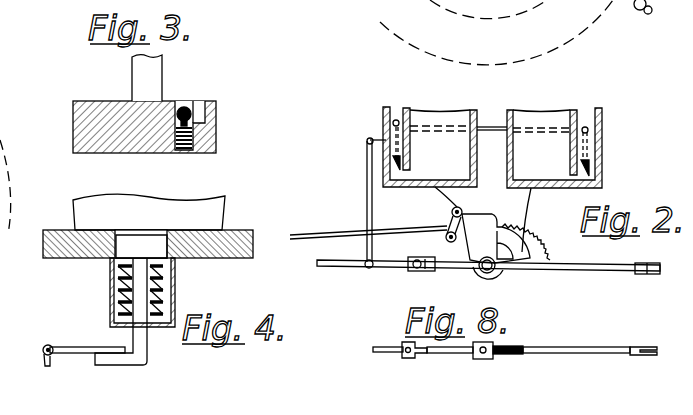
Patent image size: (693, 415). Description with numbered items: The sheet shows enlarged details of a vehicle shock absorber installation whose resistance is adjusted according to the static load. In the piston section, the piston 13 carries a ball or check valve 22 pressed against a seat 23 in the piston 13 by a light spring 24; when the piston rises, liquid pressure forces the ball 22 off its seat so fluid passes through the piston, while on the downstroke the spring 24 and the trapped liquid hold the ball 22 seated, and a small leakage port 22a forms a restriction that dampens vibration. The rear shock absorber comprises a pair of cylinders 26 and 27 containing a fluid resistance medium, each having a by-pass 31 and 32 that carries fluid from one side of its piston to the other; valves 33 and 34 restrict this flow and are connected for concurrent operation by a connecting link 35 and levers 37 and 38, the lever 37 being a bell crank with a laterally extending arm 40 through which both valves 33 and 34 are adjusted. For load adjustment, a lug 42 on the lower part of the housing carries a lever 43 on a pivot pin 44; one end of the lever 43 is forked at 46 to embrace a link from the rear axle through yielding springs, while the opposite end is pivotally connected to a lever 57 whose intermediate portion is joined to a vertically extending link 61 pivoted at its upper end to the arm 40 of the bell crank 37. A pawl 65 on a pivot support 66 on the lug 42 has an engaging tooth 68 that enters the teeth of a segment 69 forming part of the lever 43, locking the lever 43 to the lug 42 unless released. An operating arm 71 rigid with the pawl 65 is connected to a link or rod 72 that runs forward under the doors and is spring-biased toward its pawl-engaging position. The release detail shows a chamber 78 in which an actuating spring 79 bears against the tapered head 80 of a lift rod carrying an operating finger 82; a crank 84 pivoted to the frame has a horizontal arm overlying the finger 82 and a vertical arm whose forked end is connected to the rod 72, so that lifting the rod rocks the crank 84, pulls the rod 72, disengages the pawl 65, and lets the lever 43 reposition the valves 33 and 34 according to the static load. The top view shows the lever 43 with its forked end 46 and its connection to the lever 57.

In FIG. 3, the piston 13 is at (90, 100).
In FIG. 3, the ball or check valve 22 is at (214, 106).
In FIG. 3, the leakage port 22a is at (201, 103).
In FIG. 3, the seat 23 is at (193, 106).
In FIG. 3, the spring 24 is at (200, 131).
In FIG. 2, the cylinder 26 is at (462, 110).
In FIG. 2, the cylinder 27 is at (541, 113).
In FIG. 2, the by-pass 31 is at (387, 113).
In FIG. 2, the by-pass 32 is at (588, 111).
In FIG. 2, the valve 33 is at (395, 163).
In FIG. 2, the valve 34 is at (603, 142).
In FIG. 2, the connecting link 35 is at (497, 125).
In FIG. 2, the bell crank lever 37 is at (388, 132).
In FIG. 2, the lever 38 is at (604, 134).
In FIG. 2, the laterally extending arm 40 is at (370, 143).
In FIG. 2, the lug 42 is at (524, 229).
In FIG. 2, the lever 43 is at (609, 271).
In FIG. 8, the lever 43 is at (607, 345).
In FIG. 2, the pivot pin 44 is at (499, 272).
In FIG. 2, the forked end 46 is at (637, 274).
In FIG. 8, the forked end 46 is at (645, 345).
In FIG. 2, the lever 57 is at (397, 266).
In FIG. 8, the lever 57 is at (387, 345).
In FIG. 2, the vertically extending link 61 is at (373, 196).
In FIG. 2, the pawl 65 is at (473, 218).
In FIG. 2, the pivot support 66 is at (452, 212).
In FIG. 2, the engaging tooth 68 is at (527, 204).
In FIG. 2, the segment 69 is at (531, 256).
In FIG. 2, the operating arm 71 is at (437, 236).
In FIG. 2, the link or rod 72 is at (335, 234).
In FIG. 4, the chamber 78 is at (176, 278).
In FIG. 4, the actuating spring 79 is at (138, 288).
In FIG. 4, the tapered head 80 is at (126, 245).
In FIG. 4, the operating finger 82 is at (103, 360).
In FIG. 4, the crank 84 is at (60, 347).